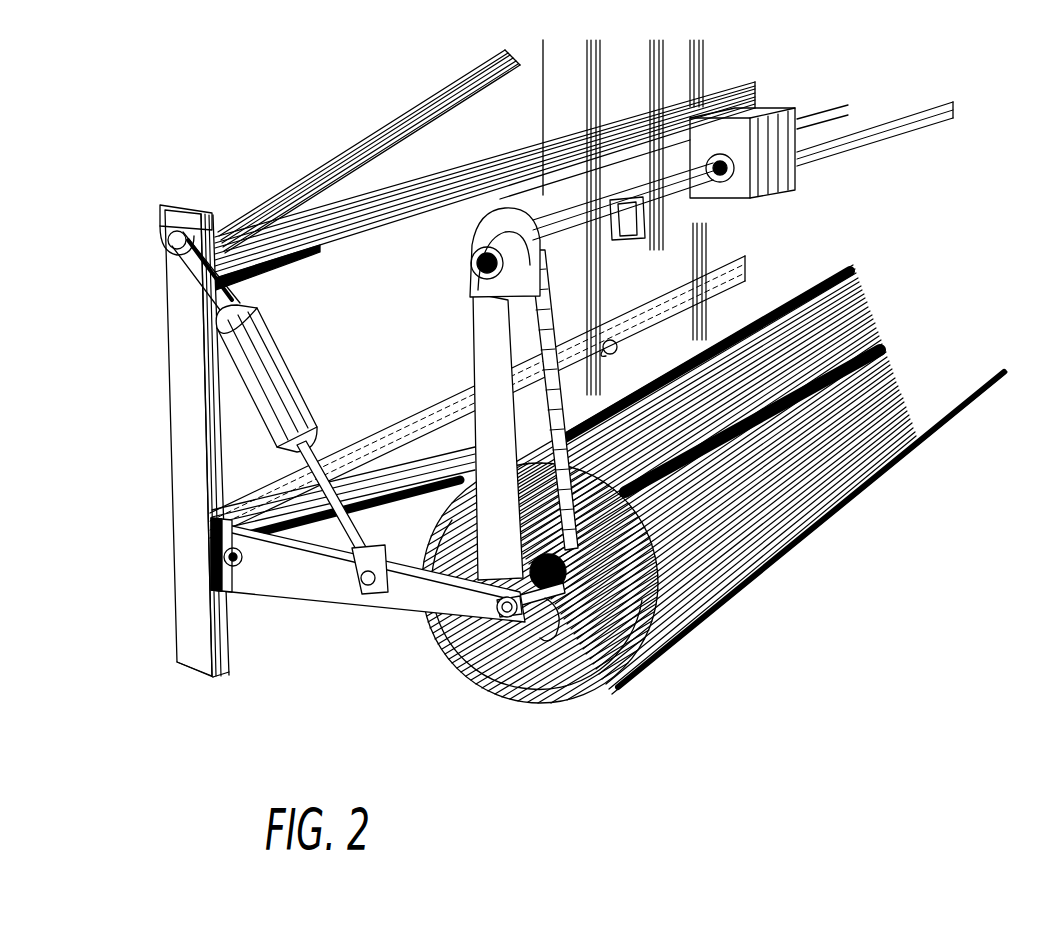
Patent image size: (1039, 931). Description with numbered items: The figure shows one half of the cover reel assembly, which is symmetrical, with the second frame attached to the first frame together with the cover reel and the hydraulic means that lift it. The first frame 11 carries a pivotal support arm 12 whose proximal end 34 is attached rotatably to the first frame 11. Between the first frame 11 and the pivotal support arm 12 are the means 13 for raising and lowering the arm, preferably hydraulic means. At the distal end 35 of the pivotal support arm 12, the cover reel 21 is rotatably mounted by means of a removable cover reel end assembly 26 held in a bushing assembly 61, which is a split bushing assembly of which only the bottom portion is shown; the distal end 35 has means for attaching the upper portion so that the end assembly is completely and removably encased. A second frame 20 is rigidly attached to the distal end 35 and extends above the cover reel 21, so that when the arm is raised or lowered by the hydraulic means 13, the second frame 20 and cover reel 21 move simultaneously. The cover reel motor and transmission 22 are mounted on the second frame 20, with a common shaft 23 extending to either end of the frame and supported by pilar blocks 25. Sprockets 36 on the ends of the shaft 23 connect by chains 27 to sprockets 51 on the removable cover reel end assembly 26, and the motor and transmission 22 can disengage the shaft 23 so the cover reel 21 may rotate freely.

The first frame 11 is at (165, 487).
The pivotal support arm 12 is at (367, 608).
The means for raising and lowering pivotal support arms 13 is at (273, 333).
The second frame 20 is at (470, 362).
The cover reel 21 is at (603, 583).
The cover reel motor and transmission 22 is at (738, 188).
The common shaft 23 is at (835, 143).
The pilar blocks 25 is at (490, 195).
The removable cover reel end assembly 26 is at (530, 565).
The chains 27 is at (566, 458).
The proximal end 34 is at (253, 572).
The distal end 35 is at (504, 627).
The sprockets 36 is at (548, 236).
The sprockets 51 is at (574, 607).
The bushing assembly 61 is at (530, 605).